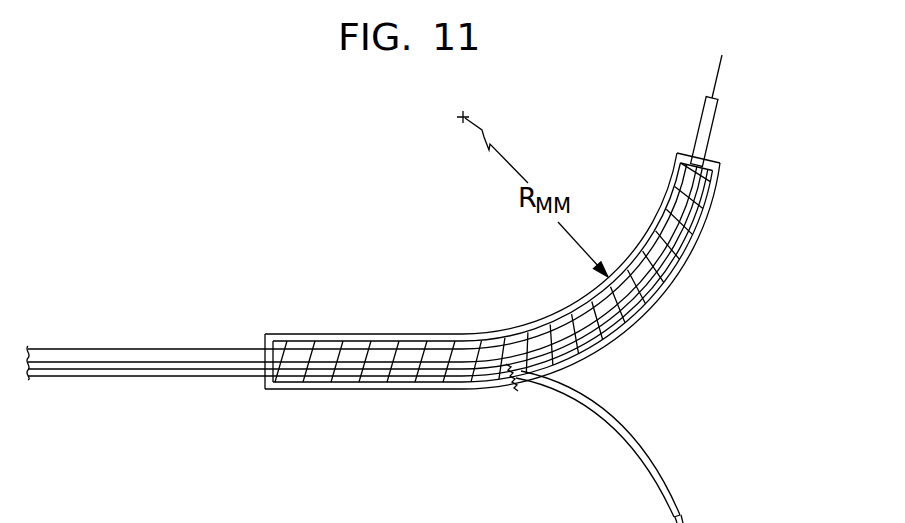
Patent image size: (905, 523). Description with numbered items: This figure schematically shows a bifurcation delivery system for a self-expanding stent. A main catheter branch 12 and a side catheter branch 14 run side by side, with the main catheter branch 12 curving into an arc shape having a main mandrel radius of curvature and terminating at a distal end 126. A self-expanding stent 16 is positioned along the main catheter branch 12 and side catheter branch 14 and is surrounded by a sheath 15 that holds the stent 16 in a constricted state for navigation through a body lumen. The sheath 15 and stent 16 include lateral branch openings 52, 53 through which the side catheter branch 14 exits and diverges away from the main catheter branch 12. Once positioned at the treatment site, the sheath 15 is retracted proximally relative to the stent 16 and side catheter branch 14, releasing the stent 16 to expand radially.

The main catheter branch 12 is at (180, 351).
The side catheter branch 14 is at (138, 377).
The sheath 15 is at (268, 333).
The stent 16 is at (300, 340).
The distal end 126 is at (720, 90).
The lateral branch opening 52 is at (522, 373).
The lateral branch opening 53 is at (513, 384).